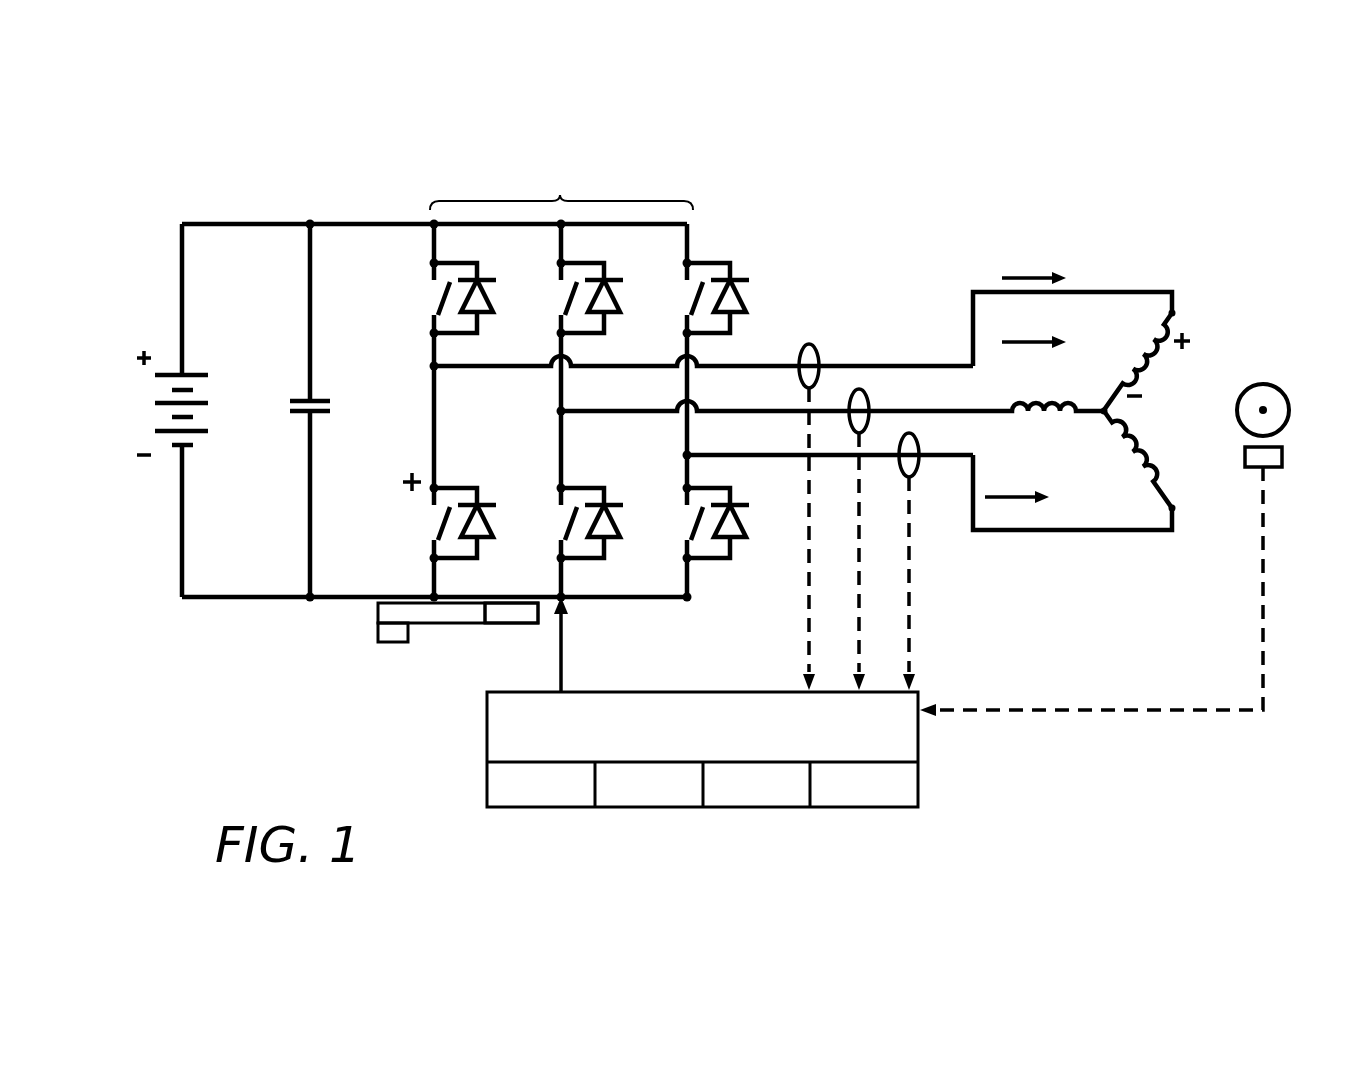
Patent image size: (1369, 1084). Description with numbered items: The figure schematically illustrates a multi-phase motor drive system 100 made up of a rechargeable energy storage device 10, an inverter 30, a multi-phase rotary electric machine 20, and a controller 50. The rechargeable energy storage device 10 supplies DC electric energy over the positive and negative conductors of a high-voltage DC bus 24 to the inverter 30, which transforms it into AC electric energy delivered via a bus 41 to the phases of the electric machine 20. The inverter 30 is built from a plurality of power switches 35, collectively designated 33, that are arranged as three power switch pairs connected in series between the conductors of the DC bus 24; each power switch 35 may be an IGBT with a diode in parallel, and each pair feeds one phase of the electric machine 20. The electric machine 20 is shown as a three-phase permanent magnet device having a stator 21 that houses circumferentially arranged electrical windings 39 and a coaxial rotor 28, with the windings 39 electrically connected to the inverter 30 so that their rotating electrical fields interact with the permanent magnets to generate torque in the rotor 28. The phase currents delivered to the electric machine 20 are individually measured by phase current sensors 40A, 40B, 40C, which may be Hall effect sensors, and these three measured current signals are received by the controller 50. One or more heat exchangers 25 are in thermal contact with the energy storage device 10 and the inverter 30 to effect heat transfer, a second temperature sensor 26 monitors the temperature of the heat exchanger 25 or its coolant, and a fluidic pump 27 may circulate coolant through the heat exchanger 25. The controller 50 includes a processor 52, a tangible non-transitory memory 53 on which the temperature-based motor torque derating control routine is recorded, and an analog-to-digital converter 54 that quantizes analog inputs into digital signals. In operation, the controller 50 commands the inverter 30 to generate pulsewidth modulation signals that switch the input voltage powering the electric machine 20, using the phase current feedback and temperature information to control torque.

The multi-phase motor drive system 100 is at (295, 178).
The rechargeable energy storage device 10 is at (100, 398).
The high-voltage DC bus 24 is at (160, 550).
The inverter 30 is at (430, 194).
The power switches 33 is at (560, 197).
The power switch 35 is at (403, 283).
The bus 41 is at (844, 282).
The phase current sensor 40A is at (809, 344).
The phase current sensor 40B is at (859, 389).
The phase current sensor 40C is at (909, 433).
The multi-phase rotary electric machine 20 is at (1110, 262).
The stator 21 is at (1173, 292).
The electrical windings 39 is at (1148, 452).
The rotor 28 is at (1282, 392).
The heat exchanger 25 is at (378, 613).
The second temperature sensor 26 is at (378, 633).
The fluidic pump 27 is at (500, 624).
The controller 50 is at (918, 740).
The processor 52 is at (648, 808).
The memory 53 is at (757, 808).
The analog-to-digital converter 54 is at (857, 808).